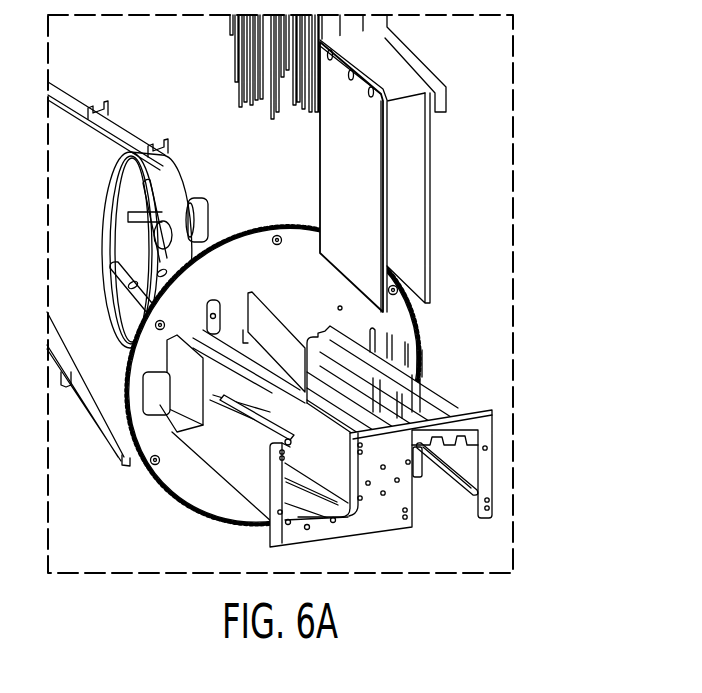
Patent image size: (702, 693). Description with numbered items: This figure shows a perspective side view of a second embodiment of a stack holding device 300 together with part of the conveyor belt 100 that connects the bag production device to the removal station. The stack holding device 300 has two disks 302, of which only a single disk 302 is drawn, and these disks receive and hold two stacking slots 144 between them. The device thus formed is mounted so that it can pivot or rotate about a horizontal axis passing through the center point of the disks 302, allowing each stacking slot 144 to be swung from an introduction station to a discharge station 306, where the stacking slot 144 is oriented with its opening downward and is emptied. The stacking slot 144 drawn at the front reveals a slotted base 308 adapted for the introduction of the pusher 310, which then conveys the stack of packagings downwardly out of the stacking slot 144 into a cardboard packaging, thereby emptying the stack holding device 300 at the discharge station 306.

The conveyor belt 100 is at (128, 120).
The stacking slot 144 is at (452, 520).
The stack holding device 300 is at (485, 343).
The disk 302 is at (318, 291).
The discharge station 306 is at (443, 369).
The slotted base 308 is at (452, 397).
The pusher 310 is at (374, 193).